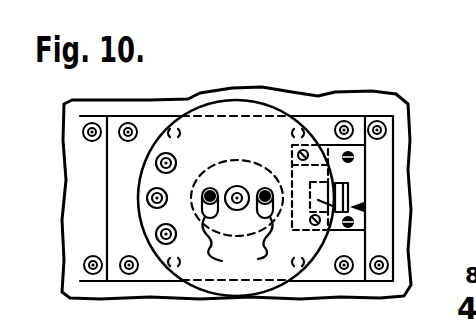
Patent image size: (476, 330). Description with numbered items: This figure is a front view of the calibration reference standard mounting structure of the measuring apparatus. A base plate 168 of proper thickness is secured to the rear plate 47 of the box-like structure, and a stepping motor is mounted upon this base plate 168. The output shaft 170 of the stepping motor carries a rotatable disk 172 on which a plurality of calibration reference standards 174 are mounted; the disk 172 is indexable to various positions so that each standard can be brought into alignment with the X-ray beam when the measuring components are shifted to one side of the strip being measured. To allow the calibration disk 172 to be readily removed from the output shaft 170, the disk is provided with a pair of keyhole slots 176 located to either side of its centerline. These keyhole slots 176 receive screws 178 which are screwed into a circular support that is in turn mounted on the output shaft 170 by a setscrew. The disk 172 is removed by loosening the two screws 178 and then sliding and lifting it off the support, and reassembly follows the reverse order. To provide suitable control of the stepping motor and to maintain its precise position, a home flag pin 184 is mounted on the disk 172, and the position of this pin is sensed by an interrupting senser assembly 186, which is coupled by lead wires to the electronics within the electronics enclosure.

The rear plate 47 is at (313, 96).
The base plate 168 is at (82, 172).
The output shaft 170 is at (237, 186).
The rotatable disk 172 is at (242, 100).
The calibration reference standards 174 is at (156, 165).
The keyhole slots 176 is at (237, 246).
The screws 178 is at (207, 187).
The home flag pin 184 is at (350, 190).
The interrupting senser assembly 186 is at (362, 207).